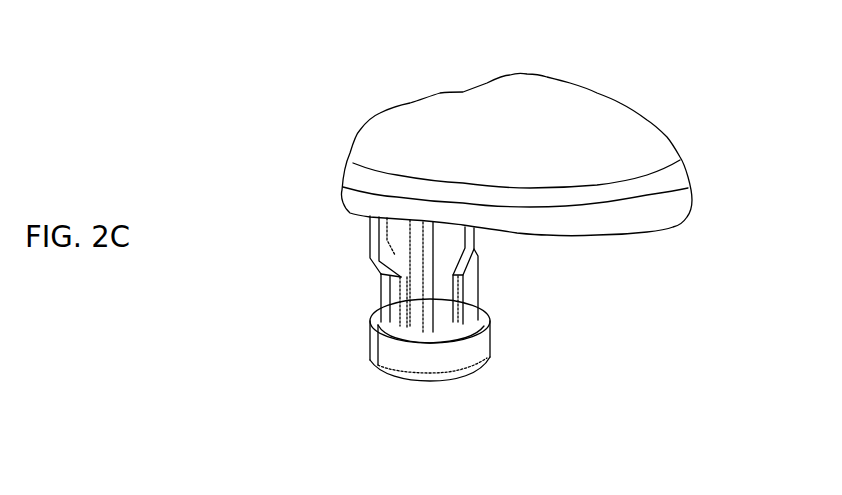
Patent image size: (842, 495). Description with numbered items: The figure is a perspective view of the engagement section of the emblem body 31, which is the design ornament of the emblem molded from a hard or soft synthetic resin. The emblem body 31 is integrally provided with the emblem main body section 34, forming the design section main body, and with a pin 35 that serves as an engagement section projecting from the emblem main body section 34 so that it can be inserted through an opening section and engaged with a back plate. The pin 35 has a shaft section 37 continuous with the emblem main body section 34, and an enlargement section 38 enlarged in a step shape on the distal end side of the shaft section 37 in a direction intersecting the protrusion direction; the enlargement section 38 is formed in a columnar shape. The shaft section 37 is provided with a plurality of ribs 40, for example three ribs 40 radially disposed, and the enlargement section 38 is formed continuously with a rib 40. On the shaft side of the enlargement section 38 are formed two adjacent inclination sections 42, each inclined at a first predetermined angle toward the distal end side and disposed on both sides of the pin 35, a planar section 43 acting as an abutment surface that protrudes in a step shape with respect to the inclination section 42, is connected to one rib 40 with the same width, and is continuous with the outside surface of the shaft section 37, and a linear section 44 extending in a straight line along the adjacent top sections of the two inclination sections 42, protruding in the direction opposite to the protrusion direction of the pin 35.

The emblem body 31 is at (591, 60).
The emblem main body section 34 is at (640, 122).
The pin 35 is at (491, 353).
The shaft section 37 is at (474, 287).
The enlargement section 38 is at (400, 352).
The rib 40 is at (400, 243).
The inclination section 42 is at (378, 310).
The planar section 43 is at (490, 325).
The linear section 44 is at (377, 318).